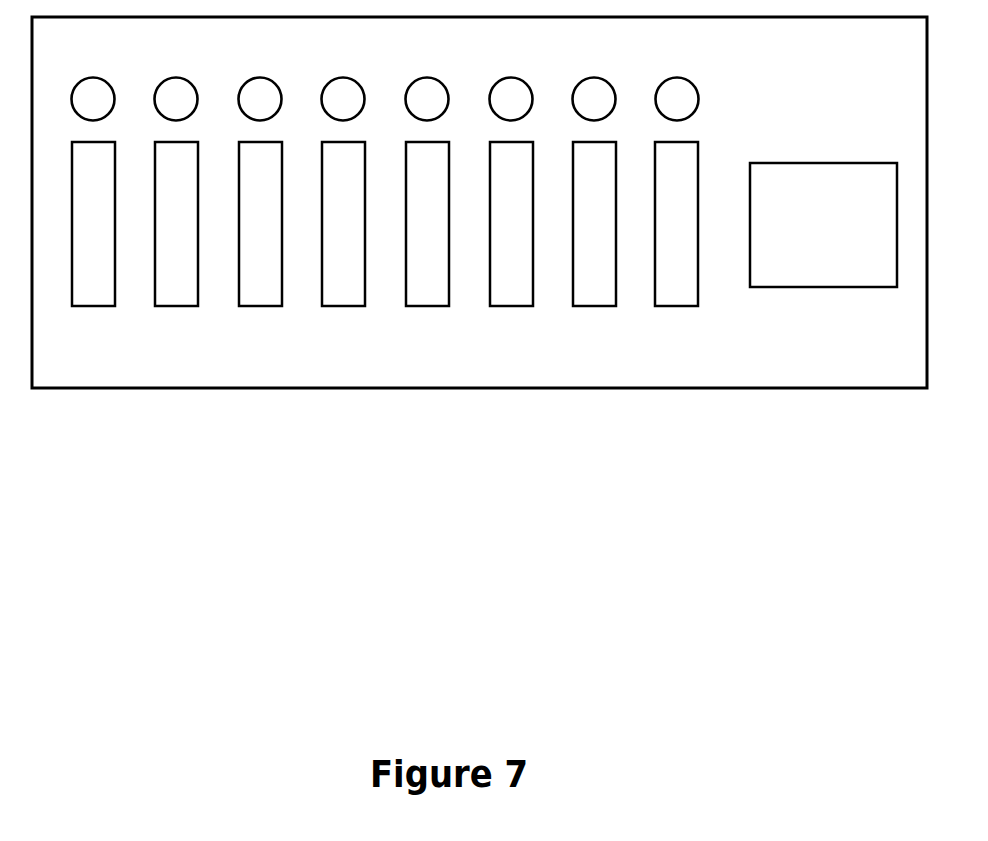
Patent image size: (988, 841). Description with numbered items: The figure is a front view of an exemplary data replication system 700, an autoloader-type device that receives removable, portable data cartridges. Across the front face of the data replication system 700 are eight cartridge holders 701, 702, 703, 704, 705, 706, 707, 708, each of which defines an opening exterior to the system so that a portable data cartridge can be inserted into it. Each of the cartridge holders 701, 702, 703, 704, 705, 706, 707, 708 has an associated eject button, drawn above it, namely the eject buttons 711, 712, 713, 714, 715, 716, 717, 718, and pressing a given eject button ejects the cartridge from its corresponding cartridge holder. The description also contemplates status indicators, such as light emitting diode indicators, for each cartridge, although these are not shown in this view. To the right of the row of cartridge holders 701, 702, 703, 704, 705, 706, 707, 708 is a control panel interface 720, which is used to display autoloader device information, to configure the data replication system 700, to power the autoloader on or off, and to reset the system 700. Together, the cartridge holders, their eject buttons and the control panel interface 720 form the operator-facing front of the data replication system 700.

The data replication system 700 is at (479, 202).
The cartridge holder 701 is at (91, 280).
The cartridge holder 702 is at (174, 280).
The cartridge holder 703 is at (256, 291).
The cartridge holder 704 is at (338, 285).
The cartridge holder 705 is at (423, 285).
The cartridge holder 706 is at (504, 285).
The cartridge holder 707 is at (590, 285).
The cartridge holder 708 is at (673, 283).
The eject button 711 is at (93, 97).
The eject button 712 is at (176, 97).
The eject button 713 is at (260, 97).
The eject button 714 is at (343, 97).
The eject button 715 is at (427, 97).
The eject button 716 is at (511, 97).
The eject button 717 is at (594, 97).
The eject button 718 is at (677, 97).
The control panel interface 720 is at (823, 225).